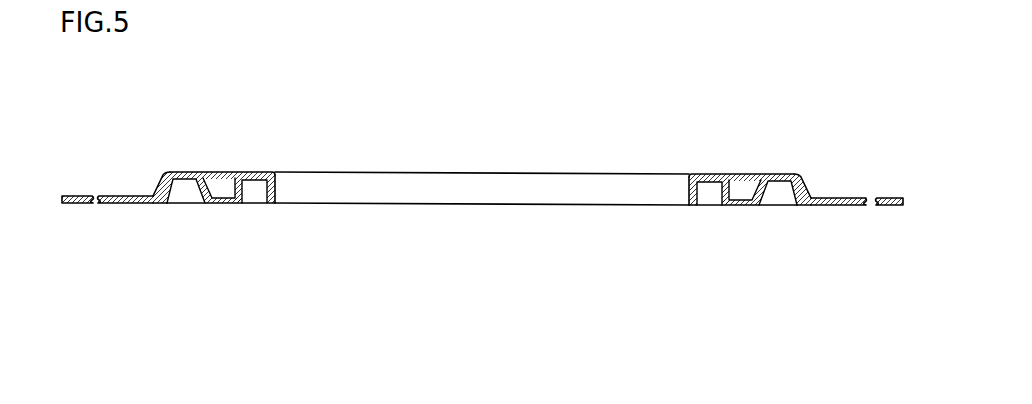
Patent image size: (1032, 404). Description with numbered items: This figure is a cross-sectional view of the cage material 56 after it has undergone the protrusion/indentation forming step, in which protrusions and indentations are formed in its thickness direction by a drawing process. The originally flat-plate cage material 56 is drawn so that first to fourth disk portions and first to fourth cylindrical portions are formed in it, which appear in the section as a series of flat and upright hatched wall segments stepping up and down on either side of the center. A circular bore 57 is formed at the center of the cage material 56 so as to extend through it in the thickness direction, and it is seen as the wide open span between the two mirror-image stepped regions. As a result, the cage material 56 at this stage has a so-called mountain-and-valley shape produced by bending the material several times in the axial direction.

The cage material 56 is at (832, 107).
The circular bore 57 is at (487, 192).